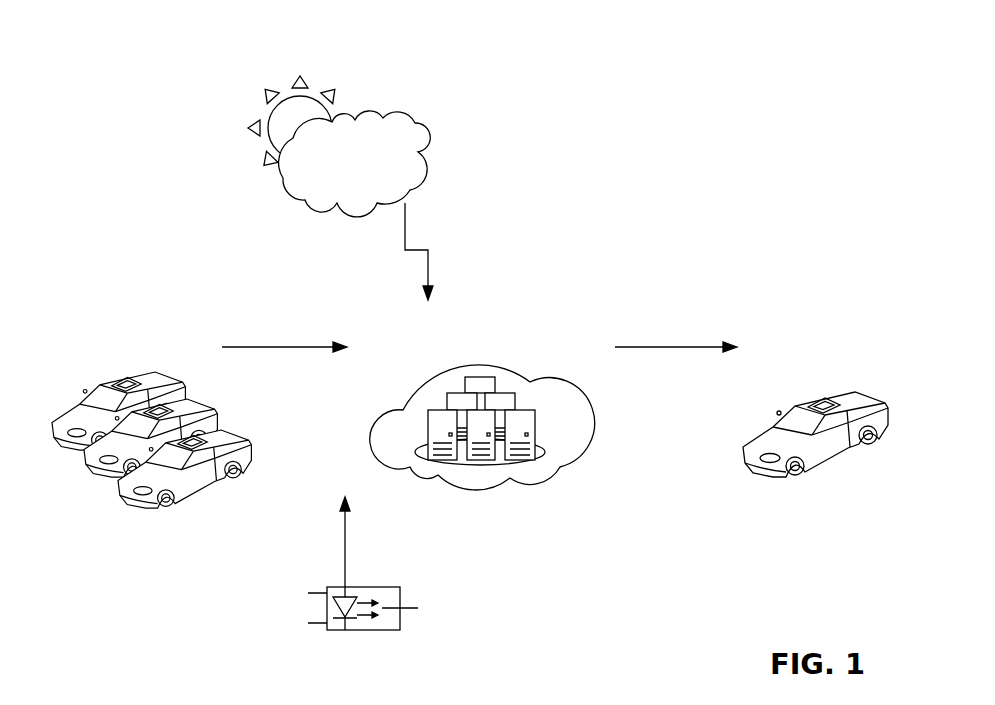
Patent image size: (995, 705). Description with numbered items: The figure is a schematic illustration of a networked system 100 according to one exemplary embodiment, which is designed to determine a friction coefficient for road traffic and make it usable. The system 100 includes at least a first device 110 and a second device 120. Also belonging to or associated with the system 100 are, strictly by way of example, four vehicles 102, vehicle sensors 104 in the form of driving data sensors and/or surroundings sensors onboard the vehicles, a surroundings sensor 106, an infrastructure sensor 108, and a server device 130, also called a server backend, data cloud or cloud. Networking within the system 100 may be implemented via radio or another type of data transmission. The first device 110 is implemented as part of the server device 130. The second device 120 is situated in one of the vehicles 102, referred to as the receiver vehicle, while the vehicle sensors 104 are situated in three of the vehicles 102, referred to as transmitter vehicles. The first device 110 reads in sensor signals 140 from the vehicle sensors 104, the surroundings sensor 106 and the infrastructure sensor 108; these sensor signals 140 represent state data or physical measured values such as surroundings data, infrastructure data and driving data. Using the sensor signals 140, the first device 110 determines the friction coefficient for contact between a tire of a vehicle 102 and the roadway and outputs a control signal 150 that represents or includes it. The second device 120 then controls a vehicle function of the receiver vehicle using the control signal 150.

The networked system 100 is at (157, 91).
The vehicle 102 is at (112, 540).
The vehicle sensor 104 is at (192, 438).
The surroundings sensor 106 is at (452, 108).
The infrastructure sensor 108 is at (360, 632).
The first device 110 is at (483, 377).
The second device 120 is at (823, 398).
The server device 130 is at (572, 491).
The sensor signal 140 is at (405, 218).
The control signal 150 is at (670, 347).